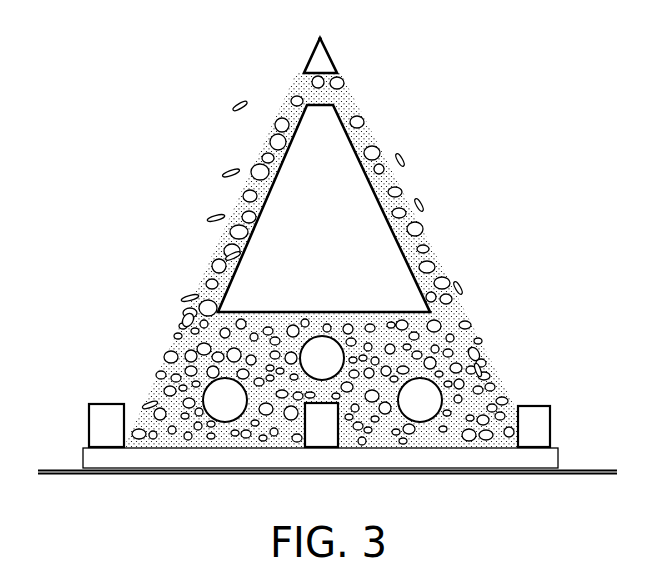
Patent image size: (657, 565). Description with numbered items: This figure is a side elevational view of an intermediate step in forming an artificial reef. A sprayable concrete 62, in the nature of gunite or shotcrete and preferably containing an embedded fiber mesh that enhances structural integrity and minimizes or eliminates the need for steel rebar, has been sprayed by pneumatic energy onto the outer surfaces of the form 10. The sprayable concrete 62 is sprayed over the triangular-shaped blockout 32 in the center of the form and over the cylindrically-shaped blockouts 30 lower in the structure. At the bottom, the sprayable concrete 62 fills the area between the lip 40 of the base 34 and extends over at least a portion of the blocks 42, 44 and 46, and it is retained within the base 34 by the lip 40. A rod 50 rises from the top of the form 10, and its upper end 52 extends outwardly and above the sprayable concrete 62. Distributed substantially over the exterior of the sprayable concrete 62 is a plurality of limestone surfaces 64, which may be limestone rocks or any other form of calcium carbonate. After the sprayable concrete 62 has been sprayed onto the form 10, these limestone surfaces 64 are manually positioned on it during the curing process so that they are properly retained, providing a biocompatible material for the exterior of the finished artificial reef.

The form 10 is at (331, 260).
The cylindrically-shaped blockouts 30 is at (172, 360).
The triangular-shaped blockout 32 is at (362, 235).
The base 34 is at (87, 463).
The lip 40 is at (562, 453).
The block 42 is at (98, 405).
The block 44 is at (335, 432).
The block 46 is at (543, 418).
The rod 50 is at (305, 63).
The upper end of rod 52 is at (327, 50).
The sprayable concrete 62 is at (423, 240).
The limestone surfaces 64 is at (187, 320).